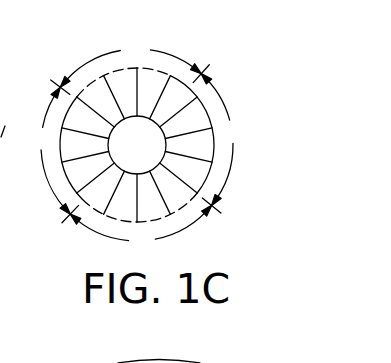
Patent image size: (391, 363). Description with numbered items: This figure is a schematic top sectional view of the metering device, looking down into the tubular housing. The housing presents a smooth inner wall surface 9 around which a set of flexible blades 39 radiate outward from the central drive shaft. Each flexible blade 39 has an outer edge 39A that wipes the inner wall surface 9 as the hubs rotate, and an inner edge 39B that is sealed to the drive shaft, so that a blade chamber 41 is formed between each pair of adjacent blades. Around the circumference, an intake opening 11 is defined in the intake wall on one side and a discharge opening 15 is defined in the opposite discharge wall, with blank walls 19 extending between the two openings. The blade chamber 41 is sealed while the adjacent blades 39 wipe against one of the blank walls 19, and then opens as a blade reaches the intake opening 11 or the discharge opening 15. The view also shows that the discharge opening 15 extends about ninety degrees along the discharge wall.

The inner wall surface 9 is at (201, 108).
The intake opening 11 is at (141, 227).
The discharge opening 15 is at (130, 65).
The blank walls 19 is at (137, 144).
The flexible blades 39 is at (141, 78).
The outer edge 39A is at (210, 155).
The inner edge 39B is at (122, 118).
The blade chamber 41 is at (82, 173).